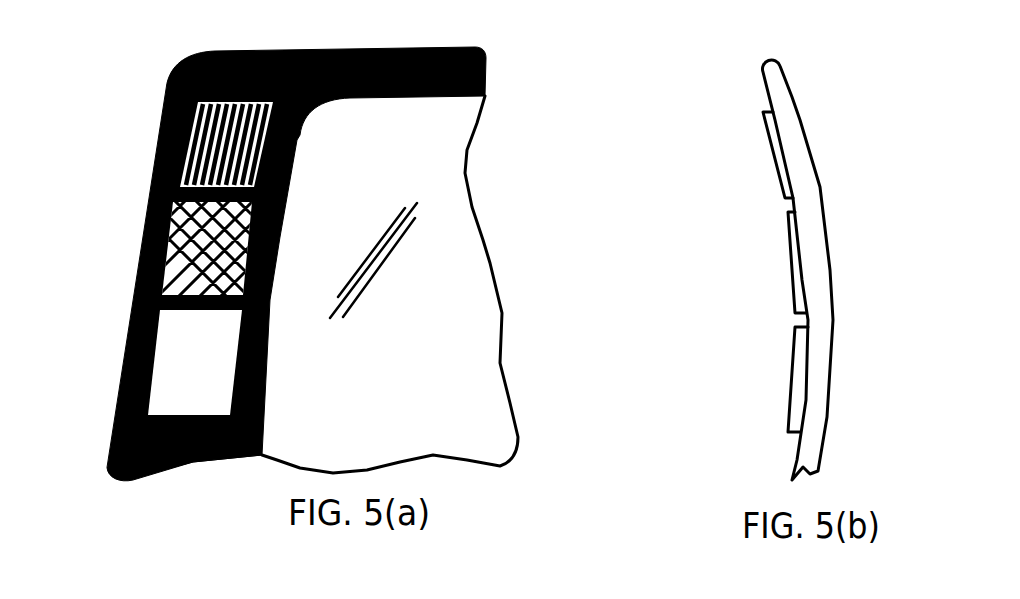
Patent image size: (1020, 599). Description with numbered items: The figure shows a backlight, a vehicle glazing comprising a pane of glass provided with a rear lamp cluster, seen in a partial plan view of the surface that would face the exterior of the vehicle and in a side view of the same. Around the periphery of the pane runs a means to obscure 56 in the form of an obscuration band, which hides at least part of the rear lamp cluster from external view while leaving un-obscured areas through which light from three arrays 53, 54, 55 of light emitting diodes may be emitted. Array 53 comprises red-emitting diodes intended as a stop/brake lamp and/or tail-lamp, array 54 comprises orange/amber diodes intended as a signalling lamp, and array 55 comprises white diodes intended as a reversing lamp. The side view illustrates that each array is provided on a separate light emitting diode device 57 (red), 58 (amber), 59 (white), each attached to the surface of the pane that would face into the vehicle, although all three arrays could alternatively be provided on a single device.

The array of light emitting diodes 53 is at (213, 147).
The array of light emitting diodes 54 is at (138, 245).
The array of light emitting diodes 55 is at (180, 360).
The means to obscure 56 is at (197, 463).
The light emitting diode device 57 is at (783, 152).
The light emitting diode device 58 is at (800, 277).
The light emitting diode device 59 is at (802, 392).